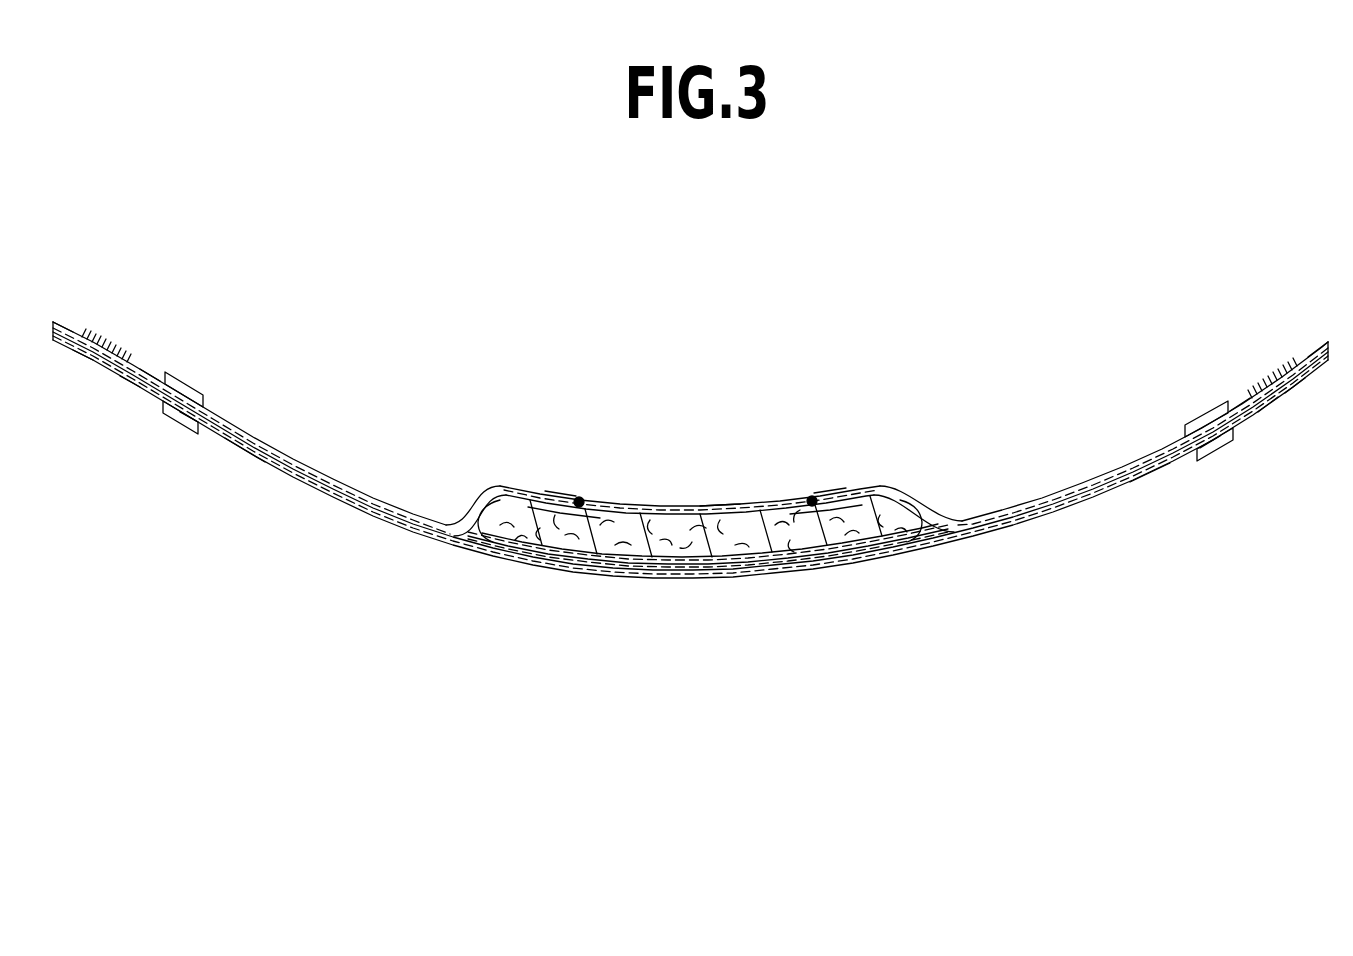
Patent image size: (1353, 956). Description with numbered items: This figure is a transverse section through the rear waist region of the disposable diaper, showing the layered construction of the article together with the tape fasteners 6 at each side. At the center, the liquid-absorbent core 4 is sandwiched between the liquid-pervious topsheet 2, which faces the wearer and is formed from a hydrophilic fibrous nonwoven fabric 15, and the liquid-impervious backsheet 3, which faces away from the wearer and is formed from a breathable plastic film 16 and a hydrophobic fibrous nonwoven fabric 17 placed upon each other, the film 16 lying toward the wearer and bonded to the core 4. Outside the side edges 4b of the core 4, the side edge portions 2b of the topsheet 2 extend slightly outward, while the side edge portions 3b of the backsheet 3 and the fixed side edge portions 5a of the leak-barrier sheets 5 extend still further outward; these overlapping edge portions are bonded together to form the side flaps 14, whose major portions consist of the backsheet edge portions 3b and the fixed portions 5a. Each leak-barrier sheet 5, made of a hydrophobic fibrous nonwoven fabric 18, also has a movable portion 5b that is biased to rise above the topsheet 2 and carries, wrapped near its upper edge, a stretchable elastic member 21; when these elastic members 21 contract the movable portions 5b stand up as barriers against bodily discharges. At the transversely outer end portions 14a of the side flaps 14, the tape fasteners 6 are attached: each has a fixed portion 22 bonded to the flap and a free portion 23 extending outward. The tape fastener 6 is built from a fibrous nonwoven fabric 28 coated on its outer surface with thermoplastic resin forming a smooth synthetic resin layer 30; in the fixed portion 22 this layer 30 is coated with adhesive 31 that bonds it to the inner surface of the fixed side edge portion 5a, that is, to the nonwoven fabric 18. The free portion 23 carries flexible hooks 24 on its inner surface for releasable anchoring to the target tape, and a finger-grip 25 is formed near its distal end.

The topsheet 2 is at (715, 505).
The side edge portions of the topsheet 2b is at (449, 515).
The backsheet 3 is at (745, 577).
The side edge portions of the backsheet 3b is at (287, 486).
The liquid-absorbent core 4 is at (757, 523).
The side edges of the core 4b is at (487, 550).
The leak-barrier sheets 5 is at (497, 484).
The fixed side edge portions of the leak-barrier sheets 5a is at (311, 473).
The movable portions of the leak-barrier sheets 5b is at (535, 481).
The tape fasteners 6 is at (52, 323).
The side flaps of the rear waist region 14 is at (245, 458).
The transversely outer end portions of the side flaps 14a is at (175, 430).
The hydrophilic fibrous nonwoven fabric 15 is at (673, 512).
The breathable liquid-impervious plastic film 16 is at (687, 575).
The hydrophobic fibrous nonwoven fabric 17 is at (631, 570).
The hydrophobic fibrous nonwoven fabric 18 is at (563, 484).
The stretchable elastic members 21 is at (585, 490).
The fixed portions of the tape fasteners 22 is at (192, 404).
The free portions of the tape fasteners 23 is at (84, 356).
The flexible hooks 24 is at (105, 346).
The finger-grips 25 is at (62, 327).
The fibrous nonwoven fabric 28 is at (152, 380).
The synthetic resin layer 30 is at (130, 383).
The adhesive 31 is at (188, 440).